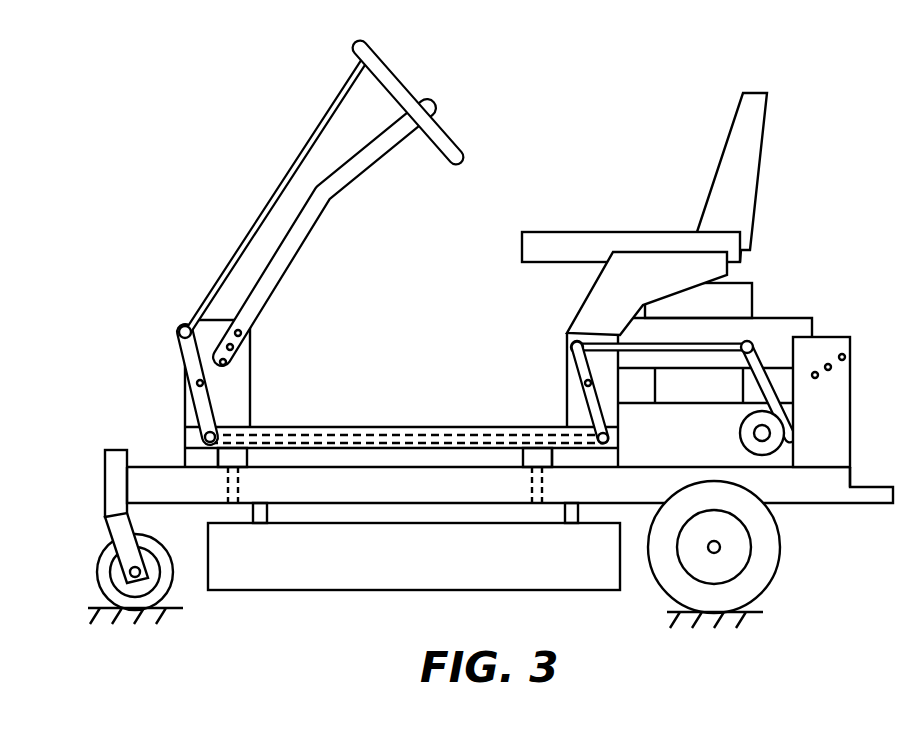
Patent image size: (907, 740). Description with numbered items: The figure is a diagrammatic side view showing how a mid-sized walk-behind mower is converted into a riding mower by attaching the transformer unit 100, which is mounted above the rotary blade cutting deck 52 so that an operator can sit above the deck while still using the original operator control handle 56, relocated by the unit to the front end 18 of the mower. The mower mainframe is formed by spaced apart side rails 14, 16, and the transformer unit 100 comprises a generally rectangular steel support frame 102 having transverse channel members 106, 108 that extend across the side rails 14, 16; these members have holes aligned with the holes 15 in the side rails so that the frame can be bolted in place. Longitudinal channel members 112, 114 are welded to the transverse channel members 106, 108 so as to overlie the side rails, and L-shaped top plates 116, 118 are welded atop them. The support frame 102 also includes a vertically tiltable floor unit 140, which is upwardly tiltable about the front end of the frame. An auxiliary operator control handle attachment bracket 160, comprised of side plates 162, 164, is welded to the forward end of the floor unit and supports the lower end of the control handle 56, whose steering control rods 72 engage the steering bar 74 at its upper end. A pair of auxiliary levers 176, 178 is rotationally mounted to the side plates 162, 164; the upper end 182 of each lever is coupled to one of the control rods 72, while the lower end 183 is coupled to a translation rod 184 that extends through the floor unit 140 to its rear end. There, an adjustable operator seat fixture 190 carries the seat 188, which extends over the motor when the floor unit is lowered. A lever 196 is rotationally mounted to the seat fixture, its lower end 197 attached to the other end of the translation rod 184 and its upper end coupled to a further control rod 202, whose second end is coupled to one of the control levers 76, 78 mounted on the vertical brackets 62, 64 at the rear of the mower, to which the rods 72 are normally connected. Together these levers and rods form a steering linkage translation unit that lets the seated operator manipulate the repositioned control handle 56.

The side rail 14 is at (460, 463).
The side rail 16 is at (143, 467).
The holes 15 is at (222, 483).
The front end 18 is at (105, 468).
The rotary blade cutting deck 52 is at (300, 562).
The operator control handle 56 is at (357, 181).
The vertical bracket 62 is at (849, 387).
The vertical bracket 64 is at (823, 337).
The steering control rod 72 is at (307, 138).
The steering bar 74 is at (392, 67).
The lever 76 is at (784, 344).
The lever 78 is at (752, 338).
The transformer unit 100 is at (466, 343).
The support frame 102 is at (620, 460).
The transverse channel member 106 is at (252, 458).
The transverse channel member 108 is at (522, 458).
The longitudinal channel member 112 is at (385, 508).
The longitudinal channel member 114 is at (385, 458).
The L-shaped top plate 116 is at (401, 401).
The L-shaped top plate 118 is at (437, 427).
The floor unit 140 is at (486, 428).
The auxiliary operator control handle attachment bracket 160 is at (252, 356).
The side plate 162 is at (376, 397).
The side plate 164 is at (240, 390).
The auxiliary lever 176 is at (130, 384).
The auxiliary lever 178 is at (190, 350).
The upper end 182 is at (180, 326).
The lower end 183 is at (205, 437).
The translation rod 184 is at (282, 427).
The seat 188 is at (630, 232).
The adjustable operator seat fixture 190 is at (593, 287).
The lever 196 is at (595, 407).
The lower end 197 is at (622, 433).
The further control rod 202 is at (667, 352).